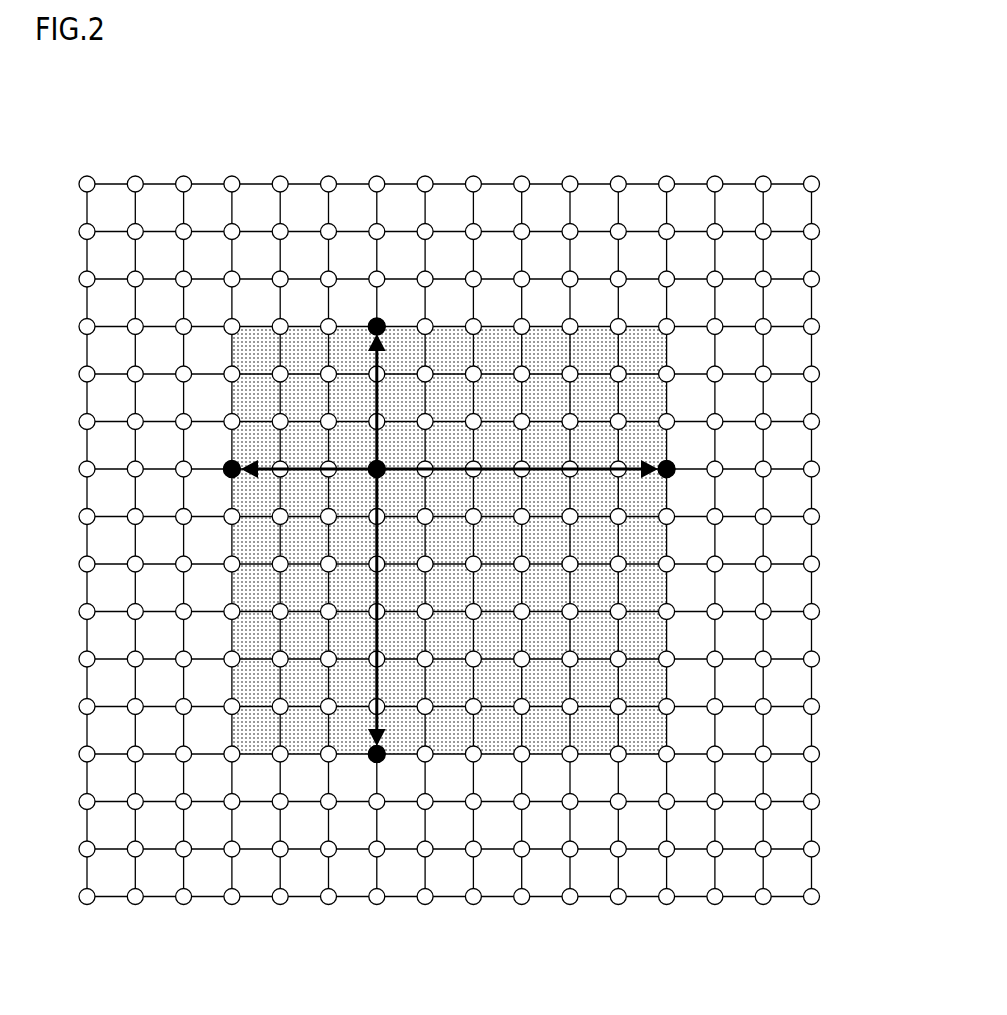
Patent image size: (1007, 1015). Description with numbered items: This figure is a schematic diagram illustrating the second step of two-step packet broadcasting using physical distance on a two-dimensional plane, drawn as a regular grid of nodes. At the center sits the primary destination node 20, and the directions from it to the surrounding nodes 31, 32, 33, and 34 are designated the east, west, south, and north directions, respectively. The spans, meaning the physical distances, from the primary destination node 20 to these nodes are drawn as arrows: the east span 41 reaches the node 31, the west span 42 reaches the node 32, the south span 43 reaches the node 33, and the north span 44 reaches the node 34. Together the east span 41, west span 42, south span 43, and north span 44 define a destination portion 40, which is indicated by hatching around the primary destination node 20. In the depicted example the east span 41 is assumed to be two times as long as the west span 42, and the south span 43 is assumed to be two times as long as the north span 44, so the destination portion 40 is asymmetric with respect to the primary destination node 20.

The primary destination node 20 is at (372, 461).
The node 31 is at (672, 460).
The node 32 is at (230, 462).
The node 33 is at (383, 762).
The node 34 is at (381, 319).
The destination portion 40 is at (666, 394).
The east span 41 is at (593, 472).
The west span 42 is at (308, 471).
The south span 43 is at (375, 686).
The north span 44 is at (380, 400).